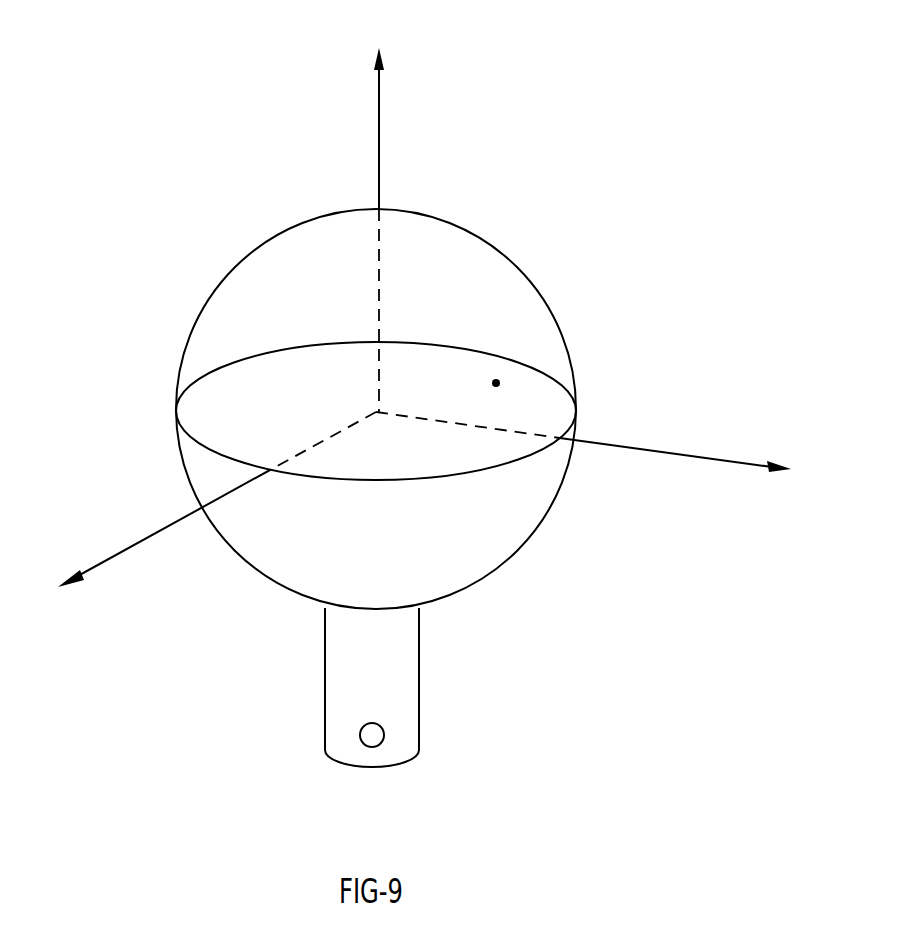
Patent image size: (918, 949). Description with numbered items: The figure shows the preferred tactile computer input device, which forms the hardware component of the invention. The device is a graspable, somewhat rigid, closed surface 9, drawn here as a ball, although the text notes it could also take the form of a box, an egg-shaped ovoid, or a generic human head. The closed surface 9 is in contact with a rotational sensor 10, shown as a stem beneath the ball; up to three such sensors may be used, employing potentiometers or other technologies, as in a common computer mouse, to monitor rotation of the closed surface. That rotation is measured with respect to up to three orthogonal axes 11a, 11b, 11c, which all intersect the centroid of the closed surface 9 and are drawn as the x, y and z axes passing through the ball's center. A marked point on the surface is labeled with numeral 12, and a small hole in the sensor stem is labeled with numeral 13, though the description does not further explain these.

The closed surface 9 is at (220, 283).
The rotational sensor 10 is at (420, 608).
The orthogonal axis 11a is at (686, 452).
The orthogonal axis 11b is at (379, 138).
The orthogonal axis 11c is at (153, 528).
The point P1 12 is at (500, 381).
The hole 13 is at (360, 734).